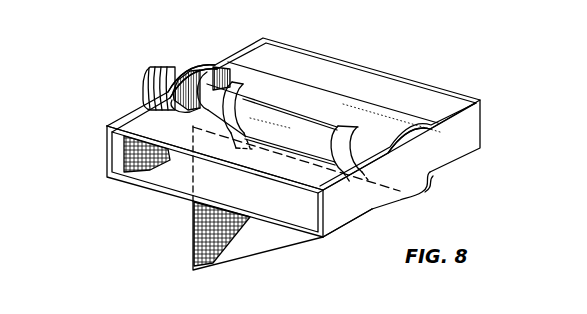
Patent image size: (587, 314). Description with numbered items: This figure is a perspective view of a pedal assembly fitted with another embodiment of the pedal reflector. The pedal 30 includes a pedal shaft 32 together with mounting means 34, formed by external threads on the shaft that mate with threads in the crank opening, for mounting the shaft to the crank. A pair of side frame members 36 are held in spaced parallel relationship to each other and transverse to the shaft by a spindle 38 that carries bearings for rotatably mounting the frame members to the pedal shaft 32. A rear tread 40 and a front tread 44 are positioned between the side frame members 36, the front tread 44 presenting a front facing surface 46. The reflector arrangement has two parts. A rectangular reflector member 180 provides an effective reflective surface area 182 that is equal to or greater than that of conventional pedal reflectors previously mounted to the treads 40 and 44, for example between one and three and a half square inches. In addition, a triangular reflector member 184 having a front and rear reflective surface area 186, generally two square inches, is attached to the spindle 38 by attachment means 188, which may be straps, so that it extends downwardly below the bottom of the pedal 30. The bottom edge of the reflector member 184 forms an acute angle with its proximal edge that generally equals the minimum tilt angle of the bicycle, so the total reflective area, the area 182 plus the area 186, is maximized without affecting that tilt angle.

The pedal 30 is at (369, 42).
The pedal shaft 32 is at (150, 78).
The means for mounting the shaft 34 is at (193, 58).
The side frame members 36 is at (144, 122).
The spindle 38 is at (288, 123).
The rear tread 40 is at (402, 88).
The front tread 44 is at (132, 124).
The front facing surface 46 is at (323, 237).
The rectangular reflector member 180 is at (128, 168).
The effective reflective surface area 182 is at (177, 177).
The reflector member 184 is at (255, 252).
The front and rear reflective surface area 186 is at (217, 245).
The attachment means 188 is at (240, 92).